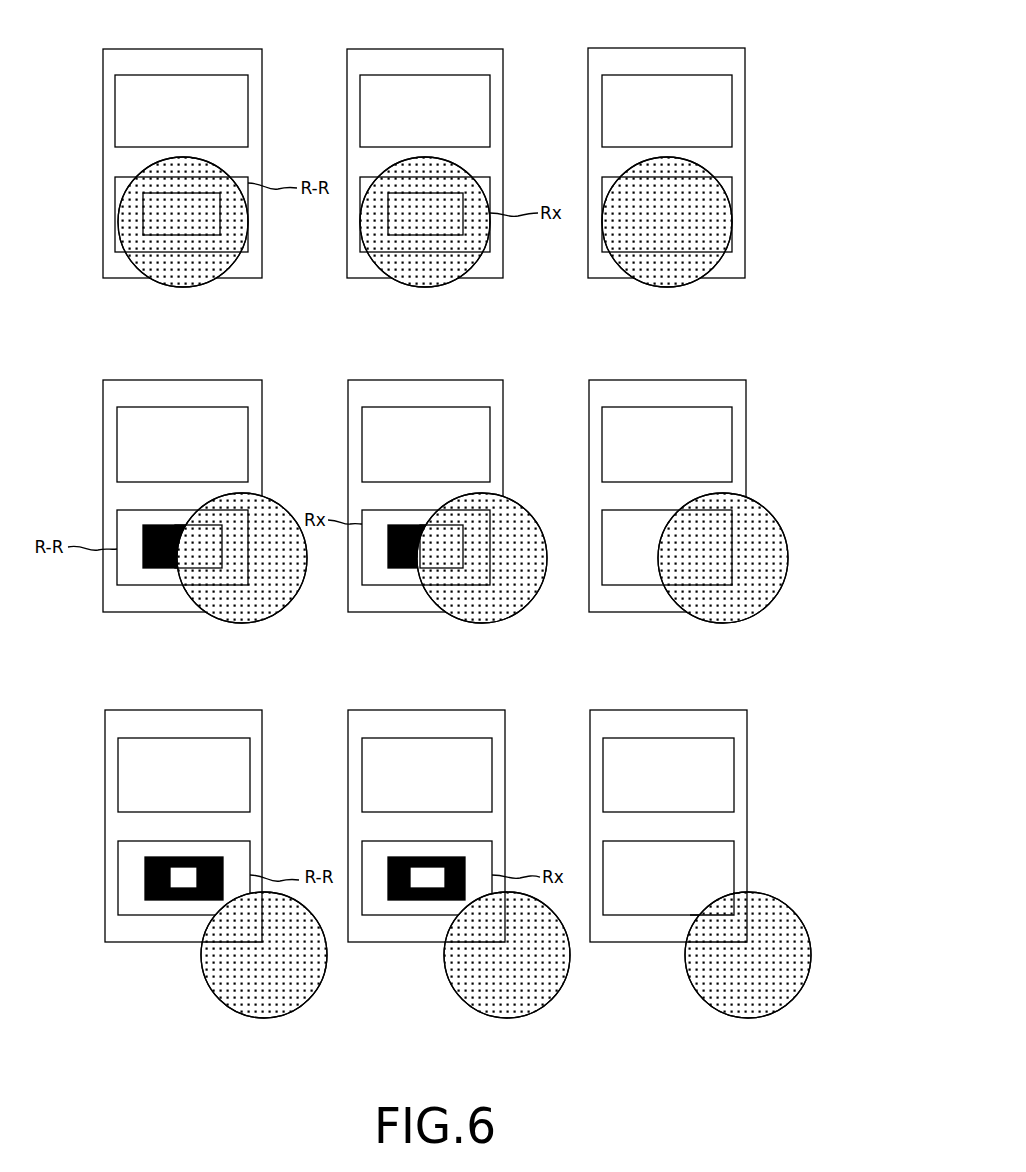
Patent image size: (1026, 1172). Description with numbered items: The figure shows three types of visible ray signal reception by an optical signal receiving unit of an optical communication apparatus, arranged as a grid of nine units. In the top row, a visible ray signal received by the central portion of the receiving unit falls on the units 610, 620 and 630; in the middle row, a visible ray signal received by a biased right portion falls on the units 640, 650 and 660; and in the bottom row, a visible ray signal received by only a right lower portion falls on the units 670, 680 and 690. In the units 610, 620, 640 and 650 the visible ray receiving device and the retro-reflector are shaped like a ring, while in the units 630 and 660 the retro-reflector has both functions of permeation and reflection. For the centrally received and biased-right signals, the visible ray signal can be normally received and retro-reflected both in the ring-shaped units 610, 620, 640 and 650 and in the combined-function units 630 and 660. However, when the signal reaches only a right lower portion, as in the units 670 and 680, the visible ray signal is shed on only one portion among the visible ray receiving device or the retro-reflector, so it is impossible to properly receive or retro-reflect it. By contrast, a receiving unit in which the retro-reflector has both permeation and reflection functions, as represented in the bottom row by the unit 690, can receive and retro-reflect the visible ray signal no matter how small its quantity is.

The optical signal receiving unit 610 is at (183, 47).
The optical signal receiving unit 620 is at (425, 47).
The optical signal receiving unit 630 is at (667, 47).
The optical signal receiving unit 640 is at (183, 378).
The optical signal receiving unit 650 is at (425, 378).
The optical signal receiving unit 660 is at (667, 378).
The optical signal receiving unit 670 is at (183, 708).
The optical signal receiving unit 680 is at (425, 708).
The optical signal receiving unit 690 is at (667, 708).